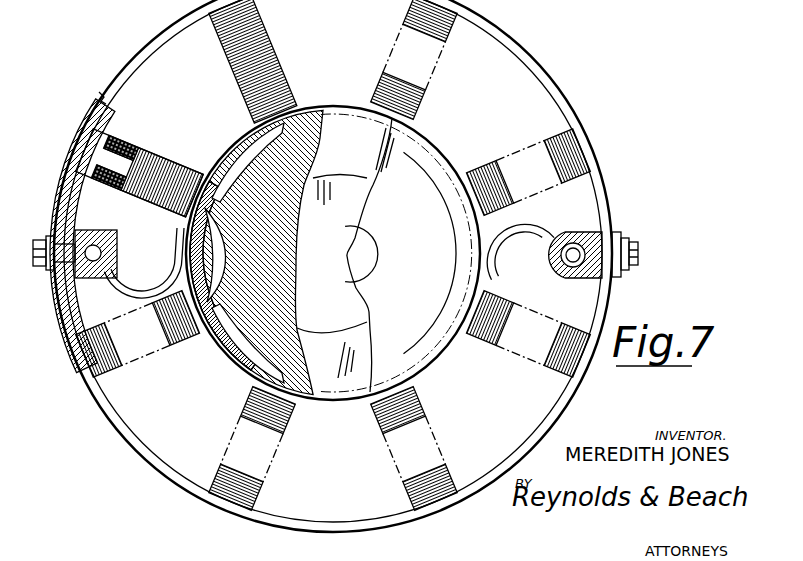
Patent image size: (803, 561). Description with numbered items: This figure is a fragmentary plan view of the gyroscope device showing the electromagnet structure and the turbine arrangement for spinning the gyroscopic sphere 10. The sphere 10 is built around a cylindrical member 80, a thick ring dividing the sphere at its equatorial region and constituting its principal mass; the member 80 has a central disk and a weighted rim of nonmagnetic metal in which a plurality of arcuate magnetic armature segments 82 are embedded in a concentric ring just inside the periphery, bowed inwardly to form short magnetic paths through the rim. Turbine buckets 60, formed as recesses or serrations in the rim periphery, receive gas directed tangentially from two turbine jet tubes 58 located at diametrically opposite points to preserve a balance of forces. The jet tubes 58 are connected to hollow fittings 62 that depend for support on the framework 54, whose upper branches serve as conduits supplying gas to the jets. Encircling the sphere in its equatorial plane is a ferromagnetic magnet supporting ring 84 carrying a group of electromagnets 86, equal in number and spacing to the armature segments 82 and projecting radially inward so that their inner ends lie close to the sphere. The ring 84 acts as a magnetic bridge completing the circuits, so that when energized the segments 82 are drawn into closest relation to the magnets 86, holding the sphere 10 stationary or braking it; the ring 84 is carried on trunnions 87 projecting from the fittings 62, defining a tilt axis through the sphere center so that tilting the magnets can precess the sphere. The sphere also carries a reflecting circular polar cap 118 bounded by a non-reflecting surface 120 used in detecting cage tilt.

The gyroscopic sphere 10 is at (414, 293).
The framework 54 is at (572, 267).
The turbine jet tubes 58 is at (168, 262).
The turbine buckets 60 is at (240, 150).
The hollow fittings 62 is at (90, 230).
The cylindrical member 80 is at (352, 398).
The magnetic armature segments 82 is at (218, 357).
The magnet supporting ring 84 is at (527, 56).
The electromagnets 86 is at (393, 80).
The trunnions 87 is at (52, 268).
The circular polar cap 118 is at (348, 257).
The non-reflecting surface 120 is at (420, 175).